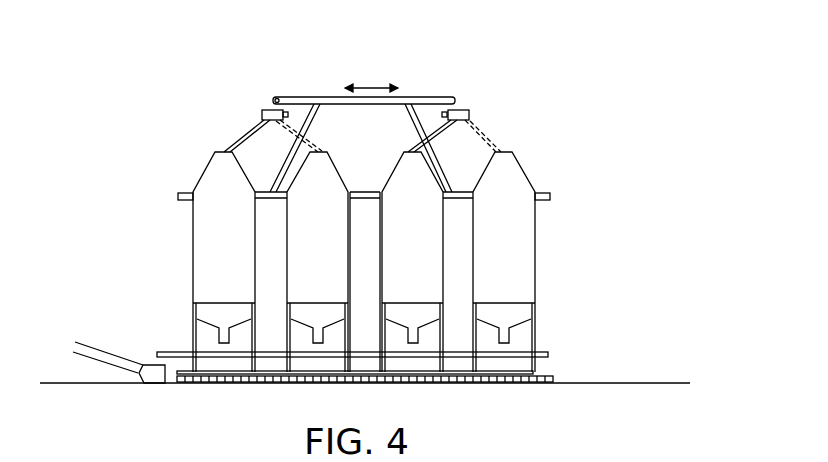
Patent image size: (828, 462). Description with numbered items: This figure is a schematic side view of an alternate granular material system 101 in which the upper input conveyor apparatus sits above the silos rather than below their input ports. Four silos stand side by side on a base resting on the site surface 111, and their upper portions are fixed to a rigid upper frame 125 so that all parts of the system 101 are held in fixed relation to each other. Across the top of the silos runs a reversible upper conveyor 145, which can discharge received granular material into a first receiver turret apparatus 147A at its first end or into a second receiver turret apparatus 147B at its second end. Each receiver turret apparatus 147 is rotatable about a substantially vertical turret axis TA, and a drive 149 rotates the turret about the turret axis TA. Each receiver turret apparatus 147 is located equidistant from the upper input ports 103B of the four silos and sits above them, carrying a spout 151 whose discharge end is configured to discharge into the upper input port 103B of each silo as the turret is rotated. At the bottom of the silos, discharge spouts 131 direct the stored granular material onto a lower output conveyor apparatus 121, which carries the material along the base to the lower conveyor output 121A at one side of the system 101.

The system 101 is at (641, 135).
The upper input port 103B is at (218, 152).
The site surface 111 is at (565, 381).
The lower output conveyor apparatus 121 is at (518, 350).
The lower conveyor output 121A is at (157, 353).
The rigid upper frame 125 is at (367, 190).
The discharge spout 131 is at (220, 337).
The reversible upper conveyor 145 is at (322, 97).
The receiver turret apparatus 147 is at (390, 106).
The first receiver turret apparatus 147A is at (262, 108).
The second receiver turret apparatus 147B is at (468, 110).
The drive 149 is at (443, 110).
The spout 151 is at (248, 127).
The turret axis TA is at (280, 94).